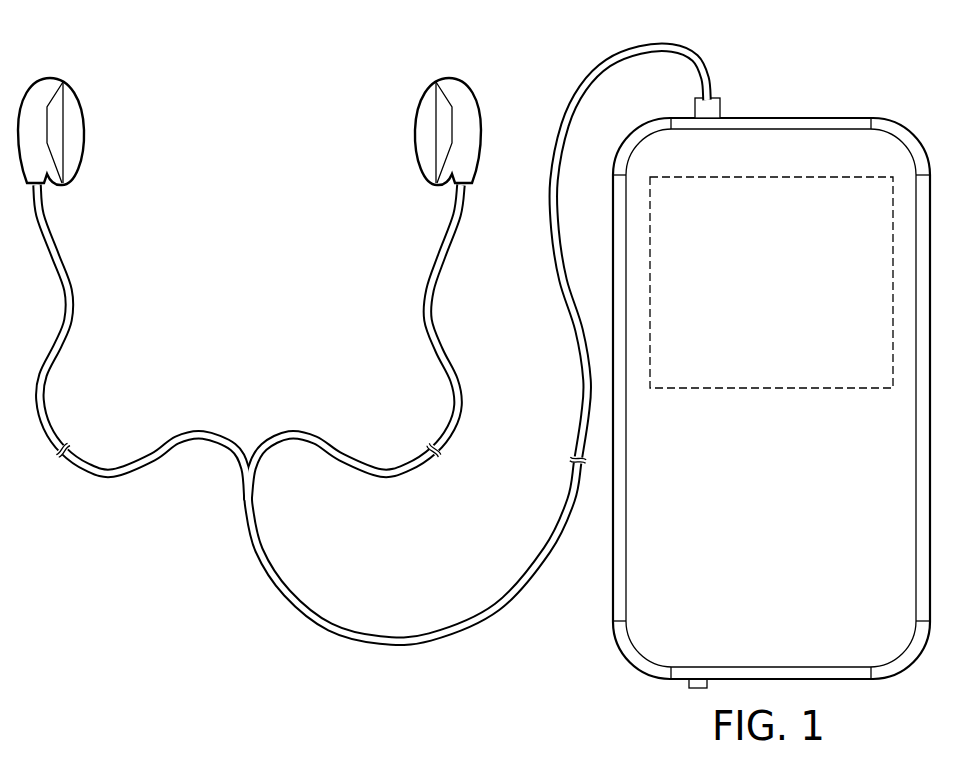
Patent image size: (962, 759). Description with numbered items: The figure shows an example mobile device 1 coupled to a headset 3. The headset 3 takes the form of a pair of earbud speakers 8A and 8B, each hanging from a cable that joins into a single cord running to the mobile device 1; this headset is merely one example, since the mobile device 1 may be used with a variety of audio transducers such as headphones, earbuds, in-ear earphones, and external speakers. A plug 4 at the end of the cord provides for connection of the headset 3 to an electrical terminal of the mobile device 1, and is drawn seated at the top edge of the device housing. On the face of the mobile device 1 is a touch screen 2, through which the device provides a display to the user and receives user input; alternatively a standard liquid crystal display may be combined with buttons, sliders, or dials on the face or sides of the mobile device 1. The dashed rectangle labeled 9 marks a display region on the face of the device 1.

The mobile device 1 is at (856, 110).
The touch screen 2 is at (781, 608).
The headset 3 is at (201, 431).
The plug 4 is at (723, 108).
The earbud speaker 8A is at (445, 76).
The earbud speaker 8B is at (52, 76).
The display 9 is at (793, 390).